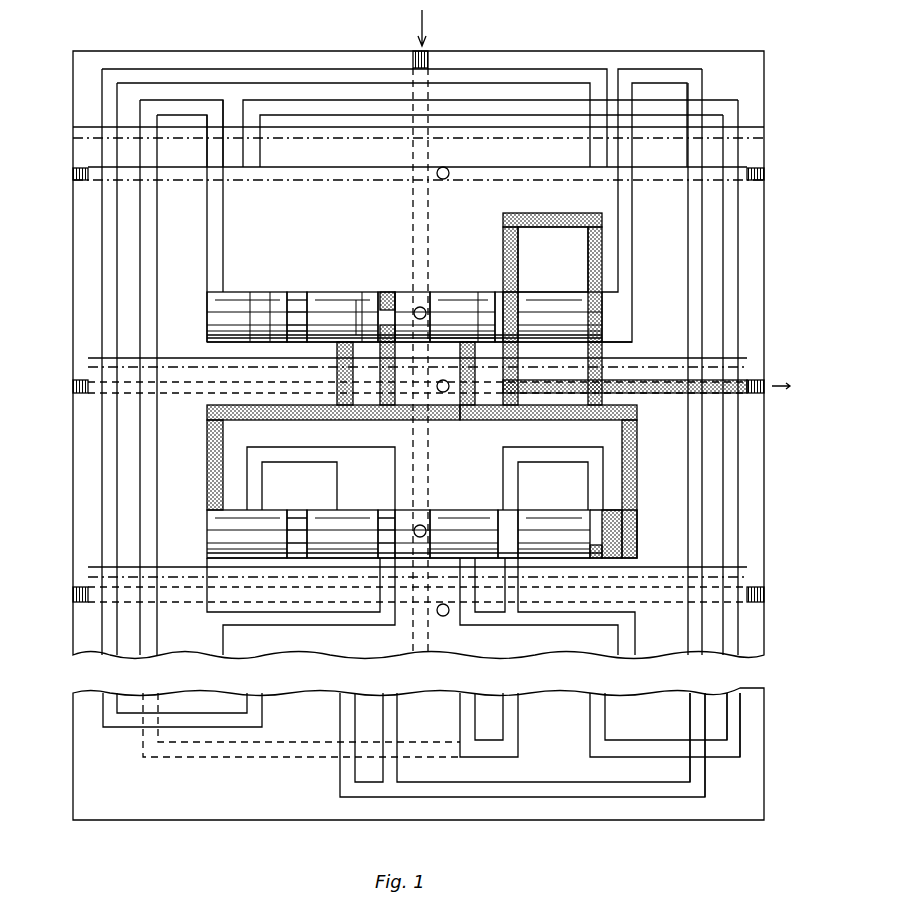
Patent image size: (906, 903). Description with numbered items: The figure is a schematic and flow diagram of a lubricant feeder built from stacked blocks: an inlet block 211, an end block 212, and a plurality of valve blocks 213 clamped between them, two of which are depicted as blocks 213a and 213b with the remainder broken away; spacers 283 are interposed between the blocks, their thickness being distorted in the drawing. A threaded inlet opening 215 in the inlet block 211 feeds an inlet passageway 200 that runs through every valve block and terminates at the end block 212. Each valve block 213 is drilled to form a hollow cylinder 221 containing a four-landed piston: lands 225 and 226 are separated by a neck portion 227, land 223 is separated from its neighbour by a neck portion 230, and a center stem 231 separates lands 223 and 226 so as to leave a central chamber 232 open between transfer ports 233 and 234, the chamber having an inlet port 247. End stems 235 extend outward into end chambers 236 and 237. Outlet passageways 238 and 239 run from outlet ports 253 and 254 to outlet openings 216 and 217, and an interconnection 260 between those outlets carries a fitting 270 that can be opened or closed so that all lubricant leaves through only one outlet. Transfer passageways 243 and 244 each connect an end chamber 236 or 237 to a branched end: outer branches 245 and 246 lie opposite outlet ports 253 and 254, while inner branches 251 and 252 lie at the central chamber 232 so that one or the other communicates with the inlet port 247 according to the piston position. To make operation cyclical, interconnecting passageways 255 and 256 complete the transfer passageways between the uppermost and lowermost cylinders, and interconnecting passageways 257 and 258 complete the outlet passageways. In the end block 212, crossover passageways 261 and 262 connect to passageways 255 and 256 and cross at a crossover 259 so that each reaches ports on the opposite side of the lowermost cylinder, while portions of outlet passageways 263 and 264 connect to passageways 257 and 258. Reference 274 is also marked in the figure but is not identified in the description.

The inlet passageway 200 is at (413, 92).
The inlet block 211 is at (73, 72).
The end block 212 is at (90, 778).
The valve block 213 is at (764, 625).
The upper substrate region 213a is at (764, 265).
The lower substrate region 213b is at (764, 490).
The threaded inlet opening 215 is at (426, 45).
The outlet opening 216 is at (73, 178).
The outlet opening 217 is at (764, 176).
The hollow cylinder 221 is at (615, 343).
The land 223 is at (440, 292).
The land 225 is at (270, 292).
The land 226 is at (300, 295).
The neck portion 227 is at (300, 292).
The neck portion 230 is at (478, 315).
The center stem 231 is at (362, 300).
The central chamber 232 is at (366, 300).
The transfer port 233 is at (398, 447).
The transfer port 234 is at (445, 342).
The end stems 235 is at (207, 320).
The end chamber 236 is at (210, 296).
The end chamber 237 is at (620, 305).
The outlet passageway 238 is at (338, 292).
The outlet passageway 239 is at (535, 214).
The transfer passageway 243 is at (223, 240).
The transfer passageway 244 is at (618, 238).
The outer branch 245 is at (335, 395).
The outer branch 246 is at (520, 400).
The inlet port 247 is at (432, 312).
The inner branch 251 is at (395, 350).
The inner branch 252 is at (505, 452).
The outlet port 253 is at (380, 292).
The outlet port 254 is at (470, 300).
The interconnecting passageway 255 is at (145, 540).
The interconnecting passageway 256 is at (702, 330).
The interconnecting passageway 257 is at (102, 505).
The interconnecting passageway 258 is at (738, 305).
The crossover 259 is at (497, 779).
The interconnection 260 is at (520, 175).
The crossover passageway 261 is at (255, 758).
The crossover passageway 262 is at (622, 792).
The outlet passageway portion 263 is at (185, 722).
The outlet passageway portion 264 is at (735, 733).
The fitting 270 is at (446, 168).
The inner loop area 274 is at (553, 300).
The spacers 283 is at (764, 130).